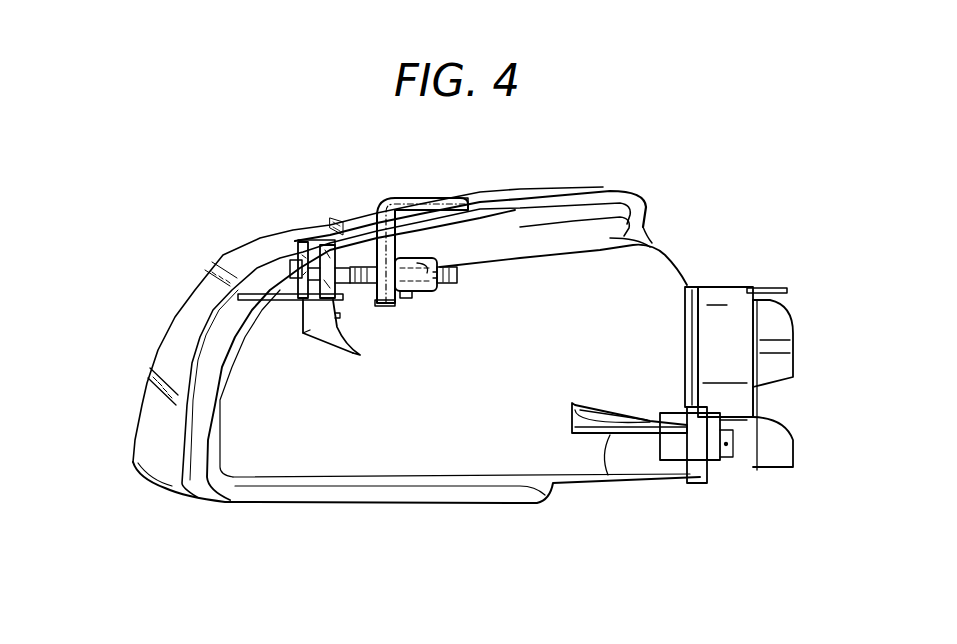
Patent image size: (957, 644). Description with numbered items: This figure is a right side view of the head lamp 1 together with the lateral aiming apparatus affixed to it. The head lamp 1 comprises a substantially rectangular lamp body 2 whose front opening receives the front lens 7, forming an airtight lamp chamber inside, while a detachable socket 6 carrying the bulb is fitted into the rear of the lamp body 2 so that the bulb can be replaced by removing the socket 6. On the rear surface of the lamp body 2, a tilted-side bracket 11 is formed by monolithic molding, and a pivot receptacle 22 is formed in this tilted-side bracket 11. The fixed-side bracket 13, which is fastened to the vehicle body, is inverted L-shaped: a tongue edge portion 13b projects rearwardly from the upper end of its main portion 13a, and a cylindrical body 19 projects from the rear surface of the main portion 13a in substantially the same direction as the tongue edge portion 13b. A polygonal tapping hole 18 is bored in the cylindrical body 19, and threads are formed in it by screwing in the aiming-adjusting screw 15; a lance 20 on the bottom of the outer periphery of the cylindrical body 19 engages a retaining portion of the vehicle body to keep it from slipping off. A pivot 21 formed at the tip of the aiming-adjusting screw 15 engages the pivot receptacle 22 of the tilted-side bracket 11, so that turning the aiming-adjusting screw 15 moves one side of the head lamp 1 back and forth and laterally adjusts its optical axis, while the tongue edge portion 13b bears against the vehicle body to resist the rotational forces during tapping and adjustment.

The head lamp 1 is at (616, 180).
The lamp body 2 is at (657, 277).
The socket 6 is at (740, 393).
The front lens 7 is at (267, 243).
The tilted-side bracket 11 is at (313, 322).
The fixed-side bracket 13 is at (405, 195).
The main portion 13a is at (383, 307).
The tongue edge portion 13b is at (467, 200).
The aiming-adjusting screw 15 is at (450, 283).
The tapping hole 18 is at (447, 263).
The cylindrical body 19 is at (420, 258).
The lance 20 is at (407, 298).
The pivot 21 is at (310, 262).
The pivot receptacle 22 is at (255, 278).